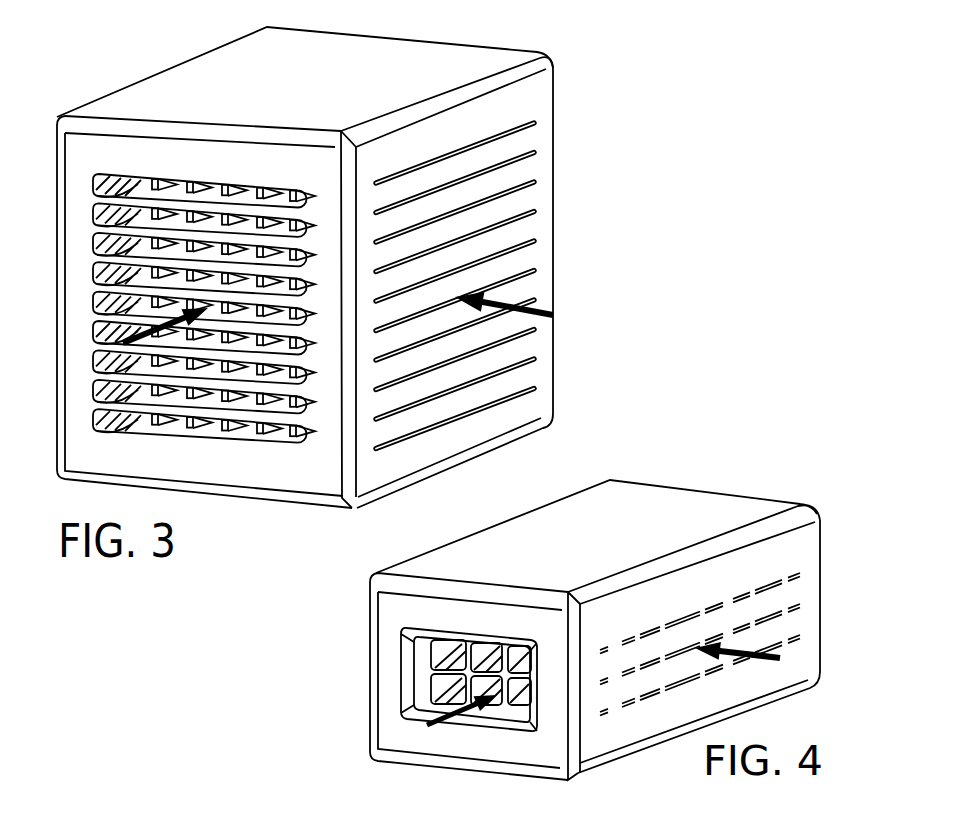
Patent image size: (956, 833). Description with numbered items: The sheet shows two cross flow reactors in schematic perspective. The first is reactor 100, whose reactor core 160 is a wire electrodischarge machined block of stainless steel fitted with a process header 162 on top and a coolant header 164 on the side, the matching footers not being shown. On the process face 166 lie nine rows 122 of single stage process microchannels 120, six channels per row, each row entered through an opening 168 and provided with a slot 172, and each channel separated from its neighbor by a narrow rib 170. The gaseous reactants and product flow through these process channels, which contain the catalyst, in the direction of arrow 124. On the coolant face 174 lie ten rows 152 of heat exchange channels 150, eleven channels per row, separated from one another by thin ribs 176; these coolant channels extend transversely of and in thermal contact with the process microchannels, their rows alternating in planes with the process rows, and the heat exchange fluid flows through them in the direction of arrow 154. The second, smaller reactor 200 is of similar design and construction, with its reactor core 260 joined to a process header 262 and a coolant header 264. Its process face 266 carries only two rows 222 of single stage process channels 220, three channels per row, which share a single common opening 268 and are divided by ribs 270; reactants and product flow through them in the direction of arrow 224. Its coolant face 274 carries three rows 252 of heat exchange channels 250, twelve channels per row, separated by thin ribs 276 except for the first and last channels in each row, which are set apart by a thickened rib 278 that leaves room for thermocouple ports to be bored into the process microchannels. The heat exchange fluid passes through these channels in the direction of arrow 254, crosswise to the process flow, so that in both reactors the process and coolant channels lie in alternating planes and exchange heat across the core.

In FIG. 3, the reactor 100 is at (203, 40).
In FIG. 3, the single stage process microchannels 120 is at (97, 197).
In FIG. 3, the rows of single stage process microchannels 122 is at (95, 269).
In FIG. 3, the arrow 124 is at (95, 318).
In FIG. 3, the heat exchange channels 150 is at (515, 131).
In FIG. 3, the rows of heat exchange channels 152 is at (550, 178).
In FIG. 3, the arrow 154 is at (530, 300).
In FIG. 3, the reactor core 160 is at (362, 60).
In FIG. 3, the process header 162 is at (102, 118).
In FIG. 3, the coolant header 164 is at (533, 69).
In FIG. 3, the process face 166 is at (82, 144).
In FIG. 3, the opening 168 is at (306, 200).
In FIG. 3, the rib 170 is at (97, 388).
In FIG. 3, the slot 172 is at (117, 423).
In FIG. 3, the coolant face 174 is at (530, 100).
In FIG. 3, the rib 176 is at (500, 134).
In FIG. 4, the reactor 200 is at (694, 477).
In FIG. 4, the single stage process channels 220 is at (435, 656).
In FIG. 4, the rows of single stage process channels 222 is at (428, 692).
In FIG. 4, the arrow 224 is at (443, 727).
In FIG. 4, the heat exchange channels 250 is at (797, 575).
In FIG. 4, the rows of heat exchange channels 252 is at (800, 585).
In FIG. 4, the arrow 254 is at (763, 660).
In FIG. 4, the reactor core 260 is at (732, 507).
In FIG. 4, the process header 262 is at (397, 585).
In FIG. 4, the coolant header 264 is at (797, 515).
In FIG. 4, the process face 266 is at (390, 608).
In FIG. 4, the common opening 268 is at (517, 715).
In FIG. 4, the rib 270 is at (505, 690).
In FIG. 4, the coolant face 274 is at (807, 537).
In FIG. 4, the rib 276 is at (753, 592).
In FIG. 4, the thickened rib 278 is at (615, 640).